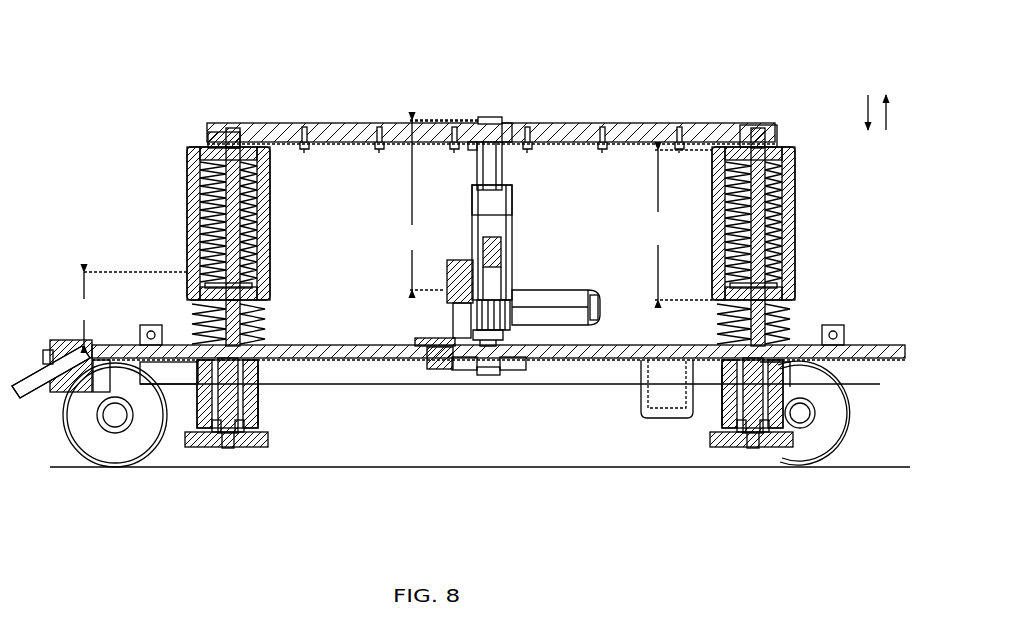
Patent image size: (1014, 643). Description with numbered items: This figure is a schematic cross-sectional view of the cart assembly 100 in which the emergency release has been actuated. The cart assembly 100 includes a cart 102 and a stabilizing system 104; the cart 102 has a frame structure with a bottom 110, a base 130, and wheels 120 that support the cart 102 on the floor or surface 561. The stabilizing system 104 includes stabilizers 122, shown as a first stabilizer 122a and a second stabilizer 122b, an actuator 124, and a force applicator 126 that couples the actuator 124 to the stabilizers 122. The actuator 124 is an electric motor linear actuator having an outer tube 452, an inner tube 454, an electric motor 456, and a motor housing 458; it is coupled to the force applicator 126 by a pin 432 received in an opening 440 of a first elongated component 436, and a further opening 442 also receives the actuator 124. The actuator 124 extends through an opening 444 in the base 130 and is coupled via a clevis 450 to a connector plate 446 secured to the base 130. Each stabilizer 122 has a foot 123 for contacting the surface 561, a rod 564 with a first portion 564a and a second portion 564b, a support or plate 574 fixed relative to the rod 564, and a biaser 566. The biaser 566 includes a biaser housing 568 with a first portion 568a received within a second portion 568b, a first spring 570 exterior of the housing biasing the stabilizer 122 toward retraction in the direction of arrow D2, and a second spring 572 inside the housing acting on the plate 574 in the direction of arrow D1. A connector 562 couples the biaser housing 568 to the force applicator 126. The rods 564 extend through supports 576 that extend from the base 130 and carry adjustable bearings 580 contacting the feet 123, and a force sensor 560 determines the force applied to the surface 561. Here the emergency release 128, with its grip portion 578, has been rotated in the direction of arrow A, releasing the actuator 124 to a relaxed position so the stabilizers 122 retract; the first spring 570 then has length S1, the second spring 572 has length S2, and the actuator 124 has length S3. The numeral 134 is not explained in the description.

The cart assembly 100 is at (840, 38).
The cart 102 is at (862, 440).
The stabilizing system 104 is at (165, 183).
The bottom 110 is at (375, 405).
The wheels 120 is at (125, 455).
The stabilizers 122 is at (275, 410).
The first stabilizer 122a is at (272, 398).
The second stabilizer 122b is at (712, 428).
The foot 123 is at (228, 447).
The actuator 124 is at (500, 267).
The force applicator 126 is at (693, 120).
The emergency release 128 is at (68, 340).
The base 130 is at (888, 345).
The bushing 134 is at (505, 150).
The pin 432 is at (478, 120).
The first elongated component 436 is at (405, 130).
The opening 440 is at (508, 128).
The opening 442 is at (475, 150).
The opening 444 is at (508, 370).
The connector plate 446 is at (460, 370).
The clevis 450 is at (480, 375).
The outer tube 452 is at (512, 240).
The inner tube 454 is at (472, 178).
The electric motor 456 is at (592, 300).
The motor housing 458 is at (600, 322).
The force sensor 560 is at (425, 340).
The floor or surface 561 is at (482, 468).
The connector 562 is at (213, 133).
The rod 564 is at (232, 128).
The first portion 564a is at (240, 212).
The second portion 564b is at (222, 400).
The biaser 566 is at (534, 308).
The biaser housing 568 is at (496, 234).
The first portion 568a is at (195, 288).
The second portion 568b is at (190, 228).
The first spring 570 is at (262, 325).
The second spring 572 is at (243, 188).
The support or plate 574 is at (250, 280).
The support 576 is at (252, 432).
The grip portion 578 is at (64, 345).
The bearings 580 is at (216, 432).
The length of first spring S1 is at (131, 308).
The length of second spring S2 is at (680, 225).
The length of actuator S3 is at (440, 205).
The arrow D1 is at (868, 106).
The arrow D2 is at (886, 128).
The arrow A is at (28, 398).